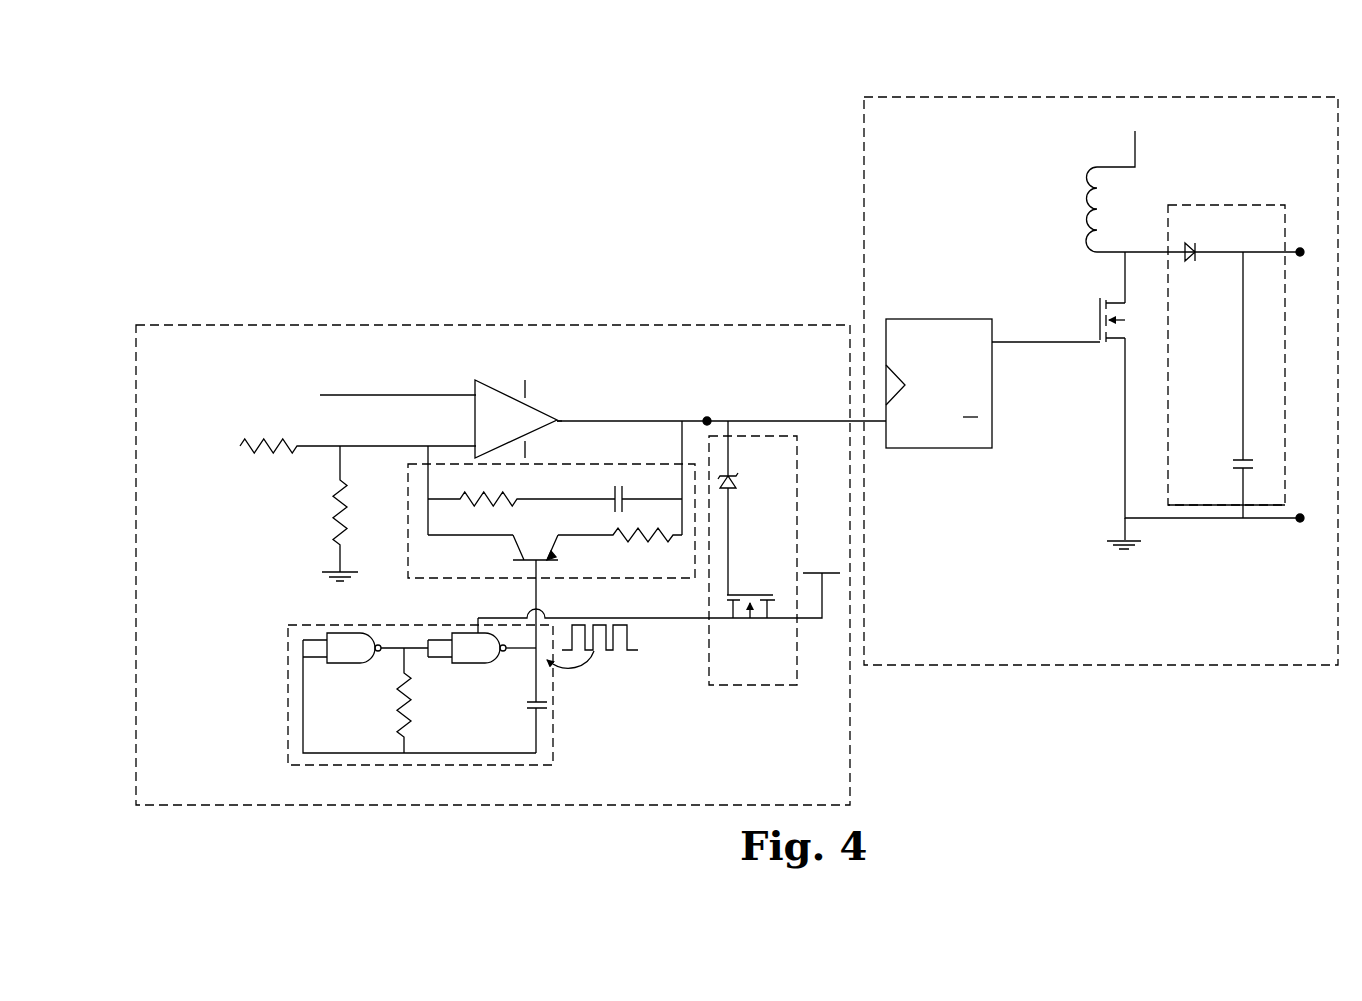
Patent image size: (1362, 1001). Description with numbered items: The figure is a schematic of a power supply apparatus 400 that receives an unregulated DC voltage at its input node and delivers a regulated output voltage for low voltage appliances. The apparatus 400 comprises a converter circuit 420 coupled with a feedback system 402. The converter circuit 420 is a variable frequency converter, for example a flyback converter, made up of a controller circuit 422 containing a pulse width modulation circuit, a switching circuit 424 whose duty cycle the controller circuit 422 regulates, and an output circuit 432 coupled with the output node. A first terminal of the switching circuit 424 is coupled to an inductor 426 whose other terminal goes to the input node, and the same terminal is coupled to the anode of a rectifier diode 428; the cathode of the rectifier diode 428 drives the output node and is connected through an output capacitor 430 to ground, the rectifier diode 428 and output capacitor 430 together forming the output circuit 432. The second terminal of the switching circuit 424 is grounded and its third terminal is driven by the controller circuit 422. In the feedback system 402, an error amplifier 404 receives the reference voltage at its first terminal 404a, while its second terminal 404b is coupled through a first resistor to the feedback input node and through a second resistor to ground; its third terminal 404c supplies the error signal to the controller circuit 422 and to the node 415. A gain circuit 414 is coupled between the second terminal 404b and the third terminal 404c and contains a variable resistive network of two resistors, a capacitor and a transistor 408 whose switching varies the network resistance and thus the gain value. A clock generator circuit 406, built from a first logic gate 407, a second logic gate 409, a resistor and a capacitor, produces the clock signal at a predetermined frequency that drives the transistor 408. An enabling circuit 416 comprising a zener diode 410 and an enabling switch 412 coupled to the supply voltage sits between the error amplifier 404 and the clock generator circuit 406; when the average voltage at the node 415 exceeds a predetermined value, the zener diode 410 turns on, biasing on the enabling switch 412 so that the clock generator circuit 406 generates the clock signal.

The power supply apparatus 400 is at (1248, 41).
The feedback system 402 is at (382, 324).
The error amplifier 404 is at (541, 404).
The first terminal of the error amplifier 404a is at (474, 394).
The second terminal of the error amplifier 404b is at (474, 446).
The third terminal of the error amplifier 404c is at (566, 425).
The clock generator circuit 406 is at (553, 693).
The first logic gate 407 is at (348, 665).
The transistor 408 is at (553, 548).
The second logic gate 409 is at (475, 665).
The zener diode 410 is at (736, 500).
The enabling switch 412 is at (750, 627).
The gain circuit 414 is at (421, 580).
The node 415 is at (707, 418).
The enabling circuit 416 is at (752, 686).
The converter circuit 420 is at (1057, 668).
The controller circuit 422 is at (985, 319).
The switching circuit 424 is at (1132, 327).
The inductor 426 is at (1140, 190).
The rectifier diode 428 is at (1203, 264).
The output capacitor 430 is at (1229, 456).
The output circuit 432 is at (1200, 506).